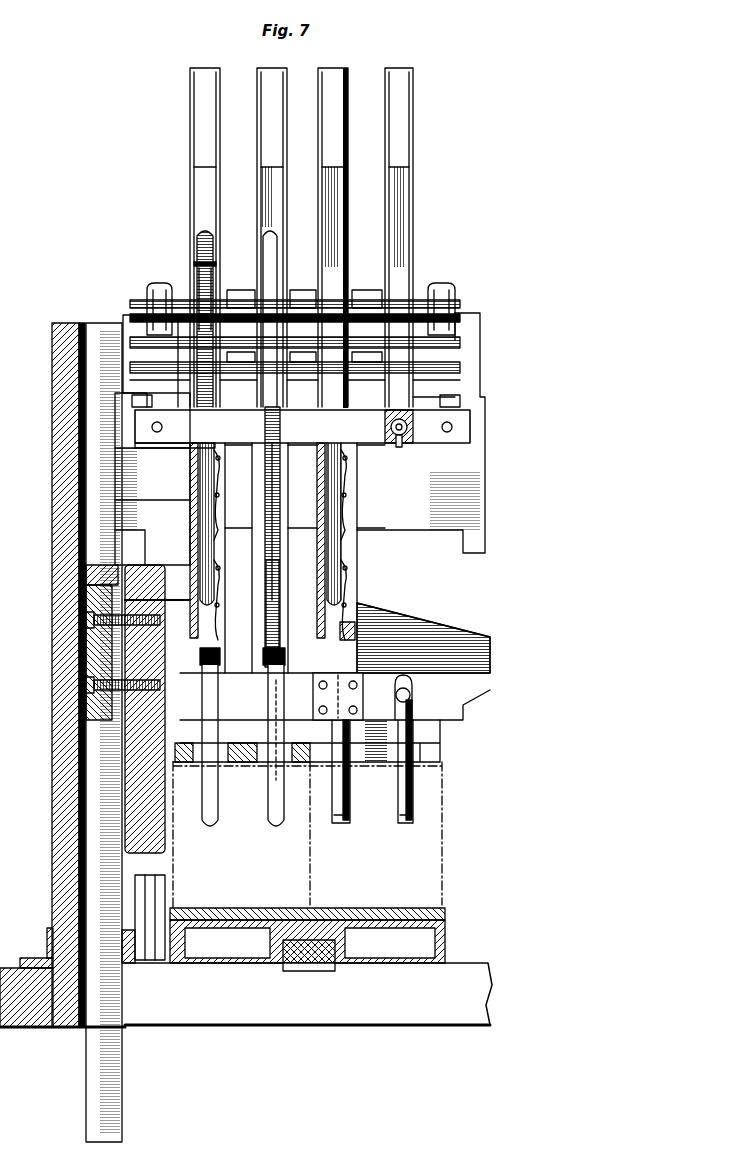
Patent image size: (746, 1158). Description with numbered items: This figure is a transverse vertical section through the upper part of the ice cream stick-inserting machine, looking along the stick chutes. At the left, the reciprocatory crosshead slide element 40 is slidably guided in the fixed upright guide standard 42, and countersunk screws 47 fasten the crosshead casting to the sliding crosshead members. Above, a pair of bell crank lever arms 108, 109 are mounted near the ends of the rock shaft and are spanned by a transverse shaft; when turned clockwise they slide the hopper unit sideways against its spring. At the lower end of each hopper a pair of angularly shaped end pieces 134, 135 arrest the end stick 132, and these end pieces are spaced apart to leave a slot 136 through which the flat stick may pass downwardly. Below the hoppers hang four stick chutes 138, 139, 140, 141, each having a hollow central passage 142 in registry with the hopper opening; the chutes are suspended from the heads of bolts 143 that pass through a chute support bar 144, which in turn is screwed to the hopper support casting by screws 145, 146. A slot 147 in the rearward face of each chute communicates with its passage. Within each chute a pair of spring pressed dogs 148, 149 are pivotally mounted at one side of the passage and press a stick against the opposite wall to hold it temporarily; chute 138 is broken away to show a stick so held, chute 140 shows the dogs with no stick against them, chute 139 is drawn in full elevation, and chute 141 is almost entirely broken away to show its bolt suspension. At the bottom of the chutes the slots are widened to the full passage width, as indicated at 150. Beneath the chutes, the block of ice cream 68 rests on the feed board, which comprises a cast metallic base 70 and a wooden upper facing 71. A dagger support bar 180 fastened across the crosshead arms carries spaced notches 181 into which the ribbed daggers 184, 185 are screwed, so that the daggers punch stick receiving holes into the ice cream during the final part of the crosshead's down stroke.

The reciprocatory crosshead slide element 40 is at (115, 1087).
The upright guide standard 42 is at (52, 368).
The countersunk screws 47 is at (80, 685).
The block of ice cream 68 is at (430, 882).
The cast metallic base 70 is at (445, 950).
The wooden upper facing 71 is at (374, 908).
The bell crank lever arm 108 is at (168, 283).
The bell crank lever arm 109 is at (440, 285).
The stick 132 is at (203, 232).
The angularly shaped end piece 134 is at (194, 264).
The angularly shaped end piece 135 is at (212, 278).
The slot 136 is at (222, 335).
The stick chute 138 is at (200, 515).
The stick chute 139 is at (282, 430).
The stick chute 140 is at (296, 521).
The stick chute 141 is at (393, 438).
The hollow central passage 142 is at (148, 455).
The bolt 143 is at (401, 447).
The chute support bar 144 is at (406, 445).
The screw 145 is at (152, 427).
The screw 146 is at (450, 423).
The slot 147 is at (276, 608).
The spring pressed dog 148 is at (217, 500).
The spring pressed dog 149 is at (217, 606).
The widened slot portion 150 is at (215, 662).
The dagger support bar 180 is at (452, 720).
The notch 181 is at (408, 690).
The dagger 184 is at (334, 835).
The dagger 185 is at (398, 835).